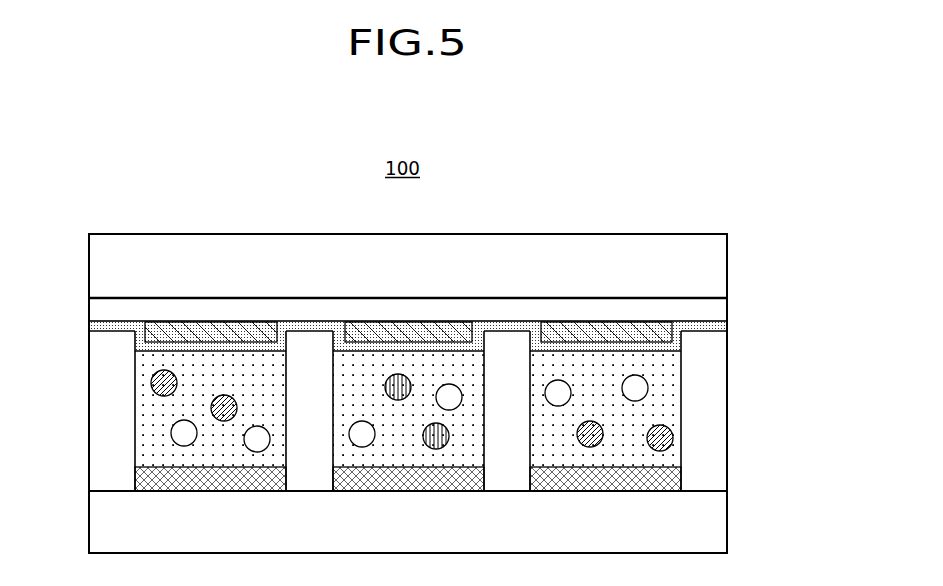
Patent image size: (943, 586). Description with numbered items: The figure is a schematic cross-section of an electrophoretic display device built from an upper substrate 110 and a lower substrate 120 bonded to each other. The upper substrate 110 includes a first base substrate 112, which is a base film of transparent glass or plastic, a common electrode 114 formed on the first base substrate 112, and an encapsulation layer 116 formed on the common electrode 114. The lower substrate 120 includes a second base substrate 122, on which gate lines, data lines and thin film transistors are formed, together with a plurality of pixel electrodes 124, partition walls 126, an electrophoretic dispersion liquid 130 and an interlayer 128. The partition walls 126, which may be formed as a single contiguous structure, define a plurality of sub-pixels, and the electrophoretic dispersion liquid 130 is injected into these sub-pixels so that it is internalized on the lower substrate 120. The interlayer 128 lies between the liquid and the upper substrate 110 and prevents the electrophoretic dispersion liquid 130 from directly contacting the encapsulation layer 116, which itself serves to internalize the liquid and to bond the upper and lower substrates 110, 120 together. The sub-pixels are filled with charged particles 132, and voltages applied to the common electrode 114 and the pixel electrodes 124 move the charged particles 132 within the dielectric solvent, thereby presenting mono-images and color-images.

The upper substrate 110 is at (472, 288).
The first base substrate 112 is at (725, 251).
The common electrode 114 is at (720, 303).
The encapsulation layer 116 is at (660, 332).
The lower substrate 120 is at (472, 437).
The second base substrate 122 is at (445, 521).
The pixel electrode 124 is at (665, 477).
The partition wall 126 is at (707, 443).
The interlayer 128 is at (680, 347).
The electrophoretic dispersion liquid 130 is at (673, 416).
The charged particles 132 is at (642, 387).